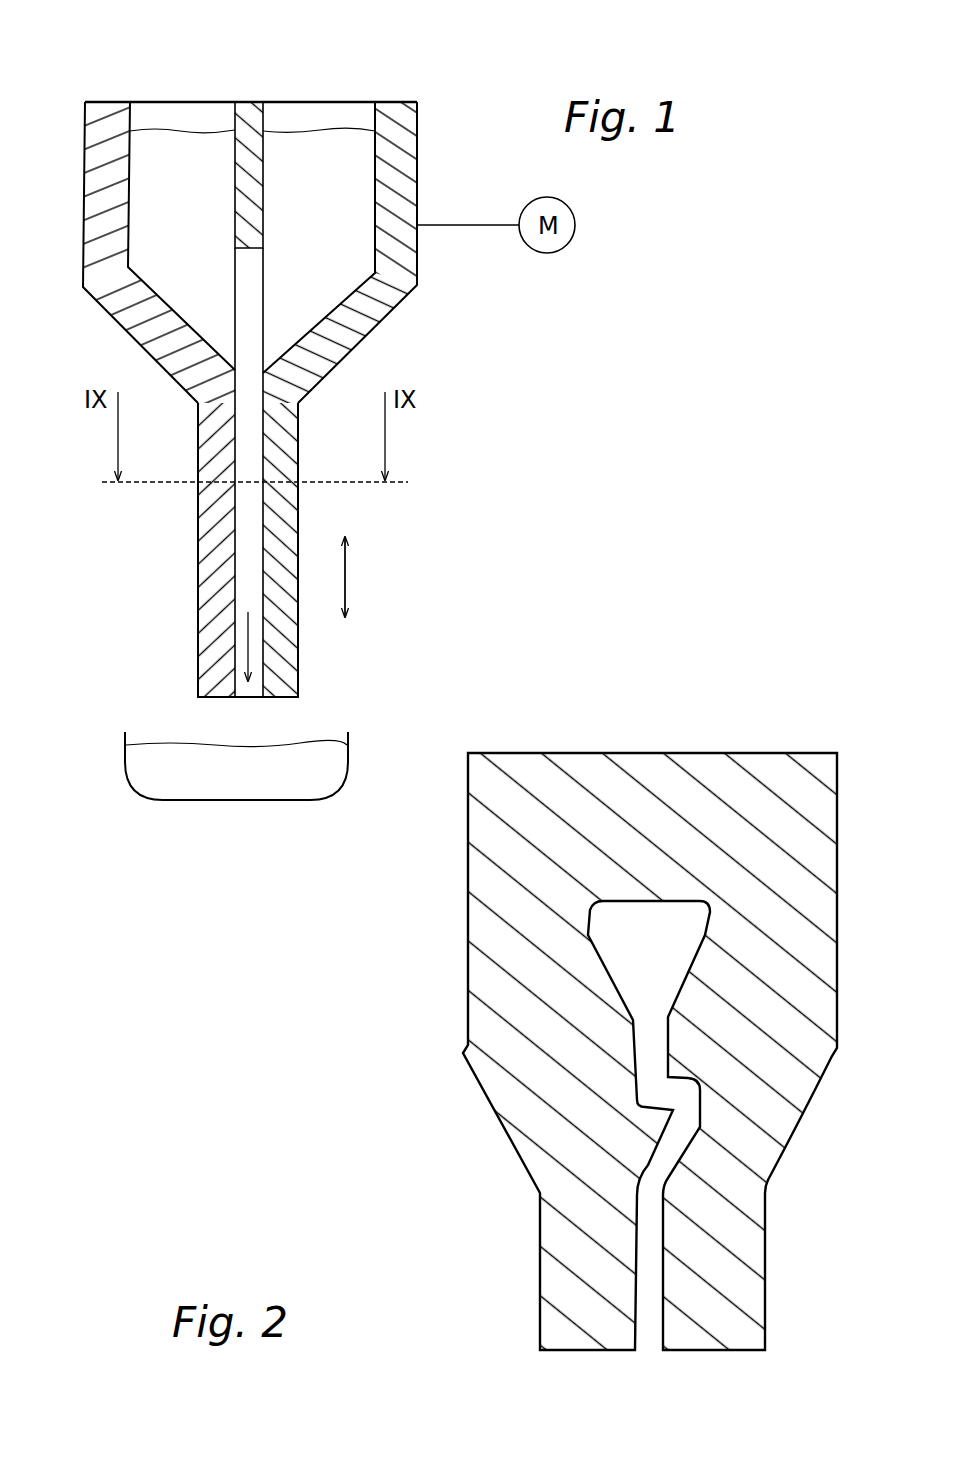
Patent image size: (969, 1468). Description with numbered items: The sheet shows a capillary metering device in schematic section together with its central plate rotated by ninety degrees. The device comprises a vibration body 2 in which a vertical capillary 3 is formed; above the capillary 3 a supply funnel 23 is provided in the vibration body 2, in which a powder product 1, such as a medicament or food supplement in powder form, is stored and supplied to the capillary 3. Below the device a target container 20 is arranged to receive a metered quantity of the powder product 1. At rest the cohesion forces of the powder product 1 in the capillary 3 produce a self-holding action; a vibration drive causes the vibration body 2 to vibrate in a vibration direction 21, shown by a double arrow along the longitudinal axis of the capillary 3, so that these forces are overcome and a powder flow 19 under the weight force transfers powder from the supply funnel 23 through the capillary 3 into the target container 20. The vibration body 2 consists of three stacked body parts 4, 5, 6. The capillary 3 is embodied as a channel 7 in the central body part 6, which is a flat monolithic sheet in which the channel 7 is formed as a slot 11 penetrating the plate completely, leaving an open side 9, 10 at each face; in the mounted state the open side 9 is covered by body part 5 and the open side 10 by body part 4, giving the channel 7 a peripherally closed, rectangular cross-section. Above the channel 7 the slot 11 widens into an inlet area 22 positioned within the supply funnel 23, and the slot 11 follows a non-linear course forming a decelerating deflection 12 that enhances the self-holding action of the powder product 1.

In FIG. 1, the powder product 1 is at (250, 456).
In FIG. 1, the vibration body 2 is at (196, 523).
In FIG. 1, the capillary 3 is at (245, 558).
In FIG. 1, the body part 4 is at (96, 207).
In FIG. 1, the body part 5 is at (403, 157).
In FIG. 1, the central body part 6 is at (251, 104).
In FIG. 2, the central body part 6 is at (655, 765).
In FIG. 1, the channel 7 is at (249, 596).
In FIG. 2, the channel 7 is at (648, 1278).
In FIG. 1, the open side 9 is at (256, 445).
In FIG. 1, the open side 10 is at (238, 463).
In FIG. 2, the slot 11 is at (652, 1272).
In FIG. 2, the decelerating deflection 12 is at (668, 1108).
In FIG. 1, the powder flow 19 is at (247, 645).
In FIG. 1, the target container 20 is at (126, 748).
In FIG. 1, the vibration direction 21 is at (346, 583).
In FIG. 1, the inlet area 22 is at (246, 300).
In FIG. 2, the inlet area 22 is at (649, 965).
In FIG. 1, the supply funnel 23 is at (315, 141).